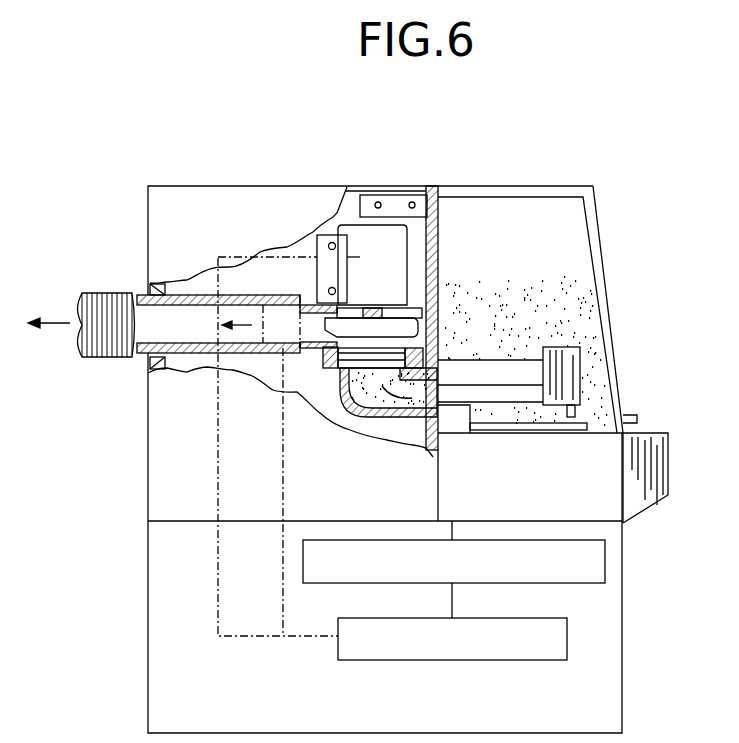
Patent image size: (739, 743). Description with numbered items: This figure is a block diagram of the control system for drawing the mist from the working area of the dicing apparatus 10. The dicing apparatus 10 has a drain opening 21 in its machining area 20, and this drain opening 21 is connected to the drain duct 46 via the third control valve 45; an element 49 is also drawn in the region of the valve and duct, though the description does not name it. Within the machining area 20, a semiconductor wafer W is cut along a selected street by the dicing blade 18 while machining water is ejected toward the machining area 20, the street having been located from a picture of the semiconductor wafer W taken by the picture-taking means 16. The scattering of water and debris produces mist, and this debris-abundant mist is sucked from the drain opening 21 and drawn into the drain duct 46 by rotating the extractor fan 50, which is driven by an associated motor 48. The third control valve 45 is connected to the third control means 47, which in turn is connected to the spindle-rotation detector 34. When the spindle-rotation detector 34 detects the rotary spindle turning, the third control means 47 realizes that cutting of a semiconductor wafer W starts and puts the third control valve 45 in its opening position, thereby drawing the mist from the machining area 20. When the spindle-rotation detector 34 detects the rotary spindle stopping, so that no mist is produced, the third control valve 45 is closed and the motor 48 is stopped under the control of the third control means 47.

The dicing apparatus 10 is at (111, 220).
The drain duct 46 is at (192, 320).
The extractor fan 50 is at (329, 204).
The motor 48 is at (382, 237).
The machining area 20 is at (548, 192).
The chuck 49 is at (407, 327).
The drain opening 21 is at (420, 390).
The picture-taking means 16 is at (593, 410).
The third control valve 45 is at (290, 340).
The semiconductor wafer W is at (502, 426).
The dicing blade 18 is at (567, 415).
The spindle-rotation detector 34 is at (605, 562).
The third control means 47 is at (567, 640).